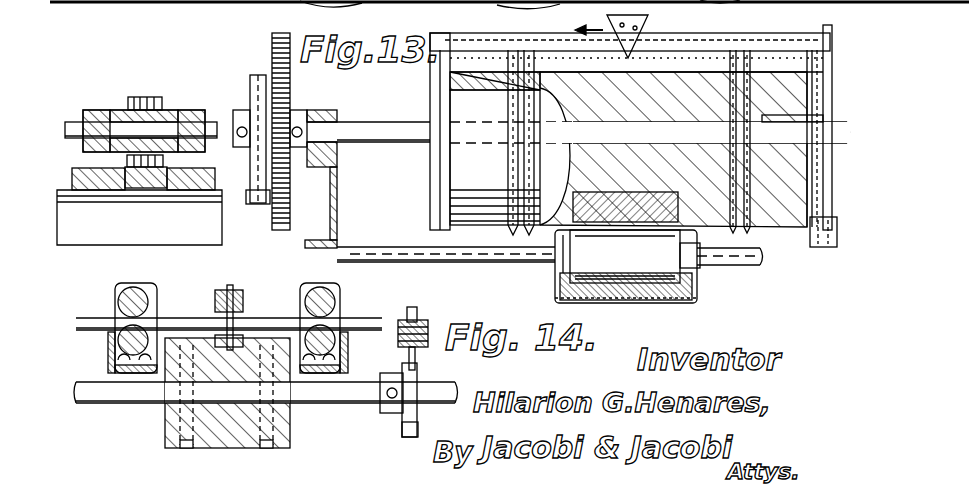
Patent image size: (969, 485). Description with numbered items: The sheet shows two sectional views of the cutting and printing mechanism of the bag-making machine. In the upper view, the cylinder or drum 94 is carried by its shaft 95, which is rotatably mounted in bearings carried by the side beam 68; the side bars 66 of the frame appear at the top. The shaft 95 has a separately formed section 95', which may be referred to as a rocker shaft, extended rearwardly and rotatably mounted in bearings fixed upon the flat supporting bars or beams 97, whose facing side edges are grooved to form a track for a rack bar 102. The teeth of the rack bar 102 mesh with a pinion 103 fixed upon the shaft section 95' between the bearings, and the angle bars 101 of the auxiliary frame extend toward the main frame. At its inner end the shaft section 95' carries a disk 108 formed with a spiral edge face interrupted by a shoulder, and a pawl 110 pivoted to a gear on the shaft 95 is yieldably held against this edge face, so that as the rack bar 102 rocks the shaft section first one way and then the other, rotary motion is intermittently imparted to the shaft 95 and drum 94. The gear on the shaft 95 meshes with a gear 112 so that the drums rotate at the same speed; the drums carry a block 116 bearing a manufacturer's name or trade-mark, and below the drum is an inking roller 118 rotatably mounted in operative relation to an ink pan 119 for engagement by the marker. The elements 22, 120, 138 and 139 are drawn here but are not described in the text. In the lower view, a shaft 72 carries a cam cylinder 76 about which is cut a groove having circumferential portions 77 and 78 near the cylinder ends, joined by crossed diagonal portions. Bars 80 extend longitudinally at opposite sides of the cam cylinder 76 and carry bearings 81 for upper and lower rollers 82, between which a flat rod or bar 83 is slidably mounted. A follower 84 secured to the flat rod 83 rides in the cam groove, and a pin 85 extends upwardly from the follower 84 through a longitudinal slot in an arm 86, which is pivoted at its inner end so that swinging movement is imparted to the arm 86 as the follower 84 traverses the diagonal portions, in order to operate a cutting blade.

In FIG. 13, the guide rail 22 is at (497, 35).
In FIG. 13, the side bar 66 is at (720, 4).
In FIG. 13, the side beam 68 is at (338, 188).
In FIG. 14, the shaft 72 is at (110, 395).
In FIG. 14, the cam cylinder 76 is at (290, 418).
In FIG. 14, the groove portion 77 is at (186, 449).
In FIG. 14, the groove portion 78 is at (270, 443).
In FIG. 14, the bar 80 is at (108, 343).
In FIG. 14, the bearing 81 is at (140, 290).
In FIG. 14, the roller 82 is at (126, 330).
In FIG. 14, the flat rod 83 is at (178, 320).
In FIG. 14, the follower 84 is at (192, 368).
In FIG. 14, the pin 85 is at (230, 286).
In FIG. 14, the arm 86 is at (240, 298).
In FIG. 13, the drum 94 is at (462, 169).
In FIG. 13, the shaft 95 is at (578, 119).
In FIG. 13, the shaft section 95' is at (141, 106).
In FIG. 13, the supporting bar 97 is at (93, 183).
In FIG. 13, the angle bar 101 is at (214, 236).
In FIG. 13, the rack bar 102 is at (152, 188).
In FIG. 13, the pinion 103 is at (150, 97).
In FIG. 13, the disk 108 is at (255, 90).
In FIG. 13, the pawl 110 is at (248, 198).
In FIG. 13, the gear 112 is at (291, 70).
In FIG. 13, the block 116 is at (690, 228).
In FIG. 13, the inking roller 118 is at (648, 268).
In FIG. 13, the ink pan 119 is at (698, 284).
In FIG. 13, the pointer 120 is at (648, 33).
In FIG. 13, the pin 138 is at (522, 133).
In FIG. 13, the pin end 139 is at (516, 226).